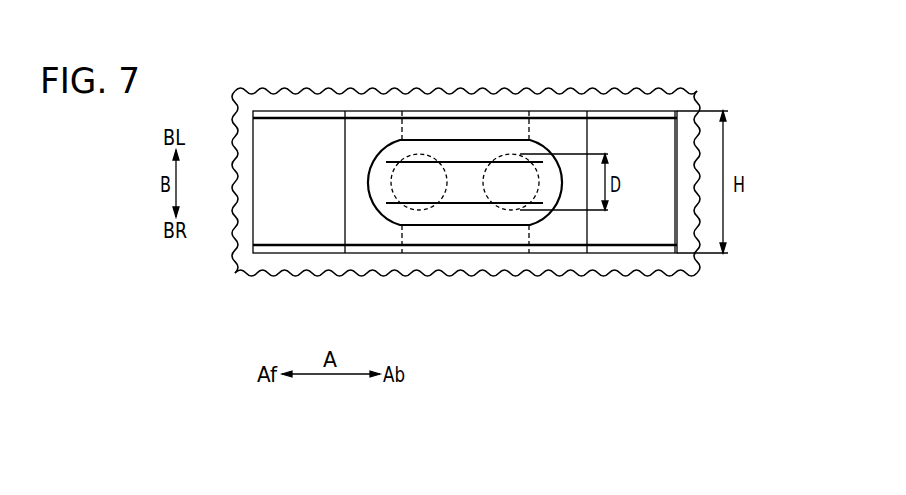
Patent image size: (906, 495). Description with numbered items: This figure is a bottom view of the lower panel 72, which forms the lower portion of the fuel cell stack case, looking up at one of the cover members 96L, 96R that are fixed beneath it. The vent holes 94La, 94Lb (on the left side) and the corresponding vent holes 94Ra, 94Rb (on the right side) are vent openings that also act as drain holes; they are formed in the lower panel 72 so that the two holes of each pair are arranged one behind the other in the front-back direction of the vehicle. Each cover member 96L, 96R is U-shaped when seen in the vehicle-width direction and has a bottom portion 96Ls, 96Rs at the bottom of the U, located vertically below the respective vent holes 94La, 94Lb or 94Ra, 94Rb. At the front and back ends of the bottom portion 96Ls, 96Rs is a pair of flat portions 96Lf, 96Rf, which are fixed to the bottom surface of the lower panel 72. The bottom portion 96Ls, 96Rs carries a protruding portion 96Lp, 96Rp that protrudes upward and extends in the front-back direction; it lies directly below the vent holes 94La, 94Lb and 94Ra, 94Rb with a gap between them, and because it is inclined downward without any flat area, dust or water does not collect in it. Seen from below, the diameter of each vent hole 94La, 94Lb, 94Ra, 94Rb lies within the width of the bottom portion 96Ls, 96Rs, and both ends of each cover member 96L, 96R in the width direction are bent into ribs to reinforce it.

The lower panel 72 is at (513, 88).
The cover member 96L is at (465, 130).
The cover member 96R is at (359, 105).
The flat portions 96Lf is at (476, 149).
The flat portions 96Rf is at (300, 127).
The protruding portion 96Lp is at (465, 149).
The protruding portion 96Rp is at (467, 152).
The bottom portion 96Ls is at (465, 308).
The bottom portion 96Rs is at (493, 248).
The vent hole 94La is at (417, 242).
The vent hole 94Ra is at (428, 208).
The vent hole 94Lb is at (560, 242).
The vent hole 94Rb is at (538, 188).